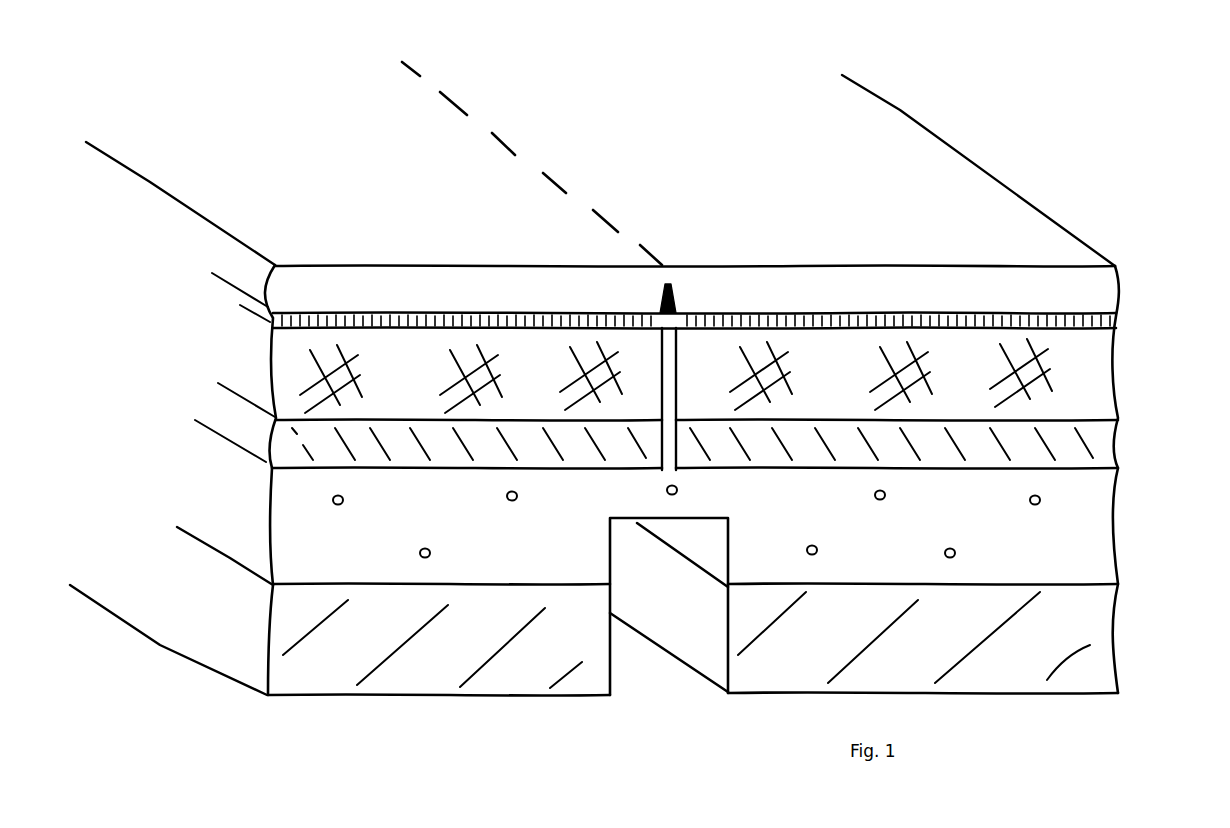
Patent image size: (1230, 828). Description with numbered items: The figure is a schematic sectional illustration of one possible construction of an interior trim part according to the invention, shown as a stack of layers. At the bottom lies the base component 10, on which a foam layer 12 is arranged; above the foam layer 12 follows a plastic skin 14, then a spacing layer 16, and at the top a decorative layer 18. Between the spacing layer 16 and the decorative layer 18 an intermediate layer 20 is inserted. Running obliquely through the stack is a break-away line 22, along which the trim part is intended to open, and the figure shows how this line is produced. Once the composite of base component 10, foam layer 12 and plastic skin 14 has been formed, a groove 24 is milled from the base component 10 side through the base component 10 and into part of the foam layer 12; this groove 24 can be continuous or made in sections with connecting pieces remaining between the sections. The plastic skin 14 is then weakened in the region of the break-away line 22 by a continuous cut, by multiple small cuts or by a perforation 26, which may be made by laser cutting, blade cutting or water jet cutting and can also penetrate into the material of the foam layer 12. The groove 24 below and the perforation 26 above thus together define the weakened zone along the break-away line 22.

The base component 10 is at (1065, 622).
The foam layer 12 is at (1083, 532).
The plastic skin 14 is at (1073, 450).
The spacing layer 16 is at (1097, 375).
The decorative layer 18 is at (1090, 290).
The intermediate layer 20 is at (950, 311).
The break-away line 22 is at (510, 140).
The groove 24 is at (650, 660).
The perforation 26 is at (676, 423).